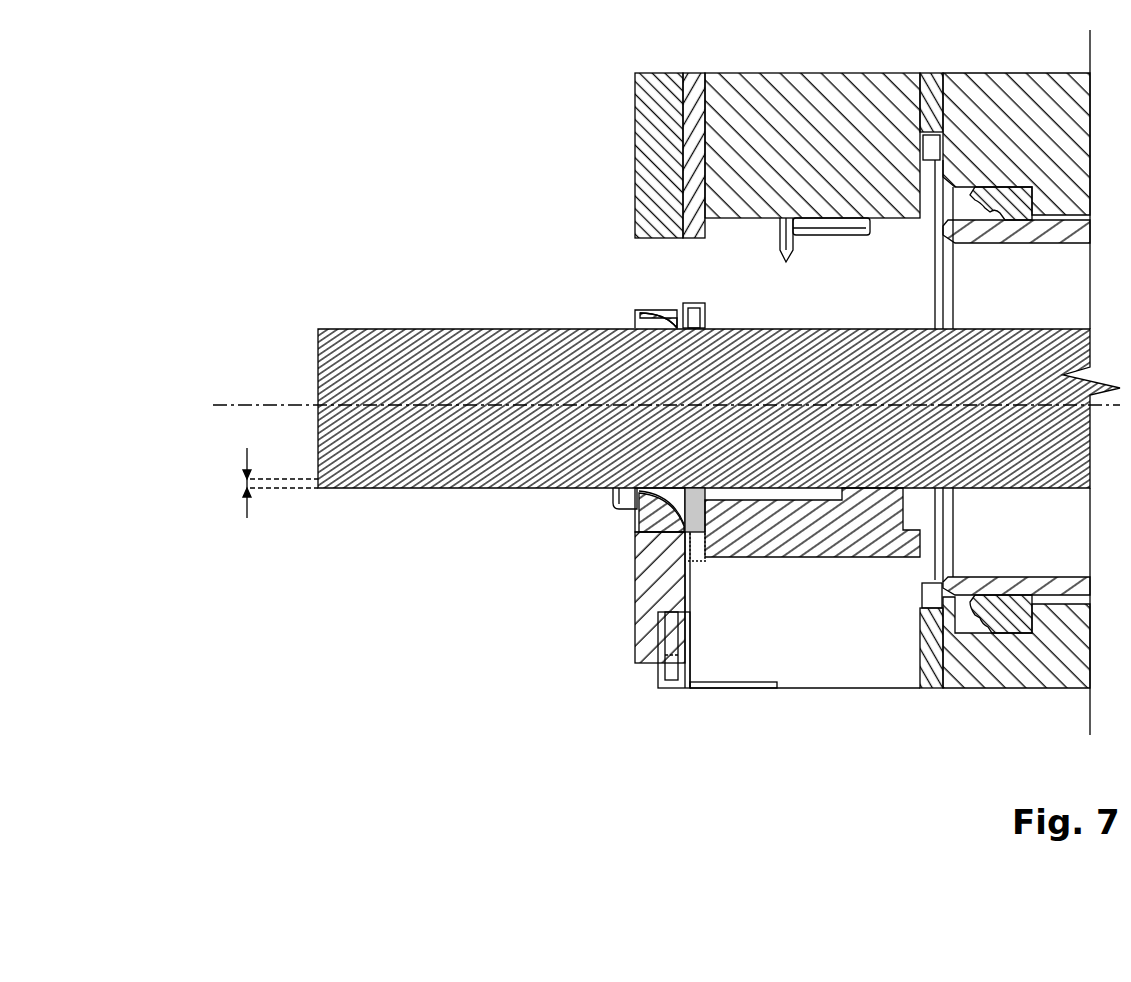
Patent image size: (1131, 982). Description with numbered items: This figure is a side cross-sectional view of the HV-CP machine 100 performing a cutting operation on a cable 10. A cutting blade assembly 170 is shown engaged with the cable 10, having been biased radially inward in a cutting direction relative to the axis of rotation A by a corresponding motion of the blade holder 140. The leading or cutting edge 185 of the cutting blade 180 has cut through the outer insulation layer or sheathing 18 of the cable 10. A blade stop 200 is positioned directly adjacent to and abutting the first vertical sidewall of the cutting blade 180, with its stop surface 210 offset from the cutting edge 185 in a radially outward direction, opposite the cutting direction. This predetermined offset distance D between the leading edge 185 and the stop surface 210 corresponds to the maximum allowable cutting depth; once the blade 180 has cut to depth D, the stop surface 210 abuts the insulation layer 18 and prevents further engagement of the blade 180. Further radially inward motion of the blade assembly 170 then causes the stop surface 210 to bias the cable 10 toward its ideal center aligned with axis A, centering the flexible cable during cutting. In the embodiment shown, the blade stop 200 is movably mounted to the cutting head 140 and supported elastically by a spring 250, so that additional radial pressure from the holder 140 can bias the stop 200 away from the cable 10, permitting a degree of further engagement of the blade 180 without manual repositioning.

The cable 10 is at (719, 380).
The outer insulation layer or sheathing 18 is at (485, 358).
The HV-CP machine 100 is at (751, 199).
The cutting blade assembly 170 is at (562, 108).
The cutting blade 180 is at (613, 405).
The leading or cutting edge 185 is at (681, 326).
The blade stop 200 is at (759, 405).
The stop surface 210 is at (692, 318).
The spring 250 is at (683, 553).
The blade holder 140 is at (843, 668).
The axis of rotation A is at (652, 407).
The predetermined offset distance D is at (264, 483).